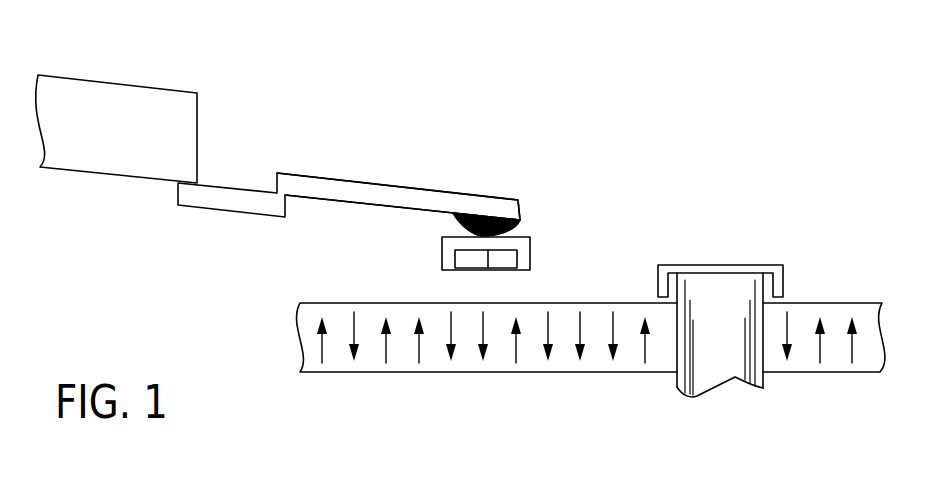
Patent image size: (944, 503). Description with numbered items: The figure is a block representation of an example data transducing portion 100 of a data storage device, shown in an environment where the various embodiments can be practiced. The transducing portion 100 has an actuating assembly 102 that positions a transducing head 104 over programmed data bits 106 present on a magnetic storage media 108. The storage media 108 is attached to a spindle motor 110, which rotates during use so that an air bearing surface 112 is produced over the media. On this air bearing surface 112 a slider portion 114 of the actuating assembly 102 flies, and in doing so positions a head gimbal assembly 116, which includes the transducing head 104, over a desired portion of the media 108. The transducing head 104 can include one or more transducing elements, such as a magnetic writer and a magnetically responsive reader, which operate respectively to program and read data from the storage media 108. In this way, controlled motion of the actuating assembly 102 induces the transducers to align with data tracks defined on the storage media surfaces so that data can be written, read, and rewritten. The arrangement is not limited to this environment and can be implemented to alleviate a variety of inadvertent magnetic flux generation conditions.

The data transducing portion 100 is at (730, 66).
The actuating assembly 102 is at (303, 75).
The transducing head 104 is at (442, 258).
The programmed data bits 106 is at (312, 302).
The magnetic storage media 108 is at (450, 375).
The spindle motor 110 is at (725, 240).
The air bearing surface 112 is at (540, 287).
The slider portion 114 is at (404, 187).
The head gimbal assembly 116 is at (538, 217).